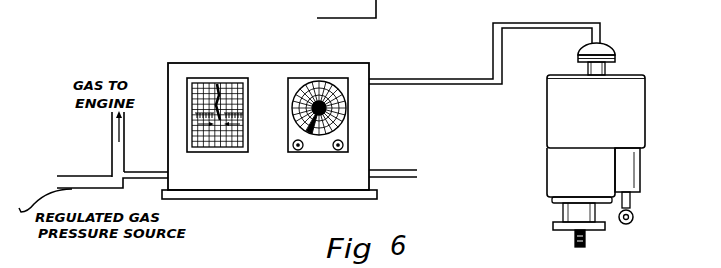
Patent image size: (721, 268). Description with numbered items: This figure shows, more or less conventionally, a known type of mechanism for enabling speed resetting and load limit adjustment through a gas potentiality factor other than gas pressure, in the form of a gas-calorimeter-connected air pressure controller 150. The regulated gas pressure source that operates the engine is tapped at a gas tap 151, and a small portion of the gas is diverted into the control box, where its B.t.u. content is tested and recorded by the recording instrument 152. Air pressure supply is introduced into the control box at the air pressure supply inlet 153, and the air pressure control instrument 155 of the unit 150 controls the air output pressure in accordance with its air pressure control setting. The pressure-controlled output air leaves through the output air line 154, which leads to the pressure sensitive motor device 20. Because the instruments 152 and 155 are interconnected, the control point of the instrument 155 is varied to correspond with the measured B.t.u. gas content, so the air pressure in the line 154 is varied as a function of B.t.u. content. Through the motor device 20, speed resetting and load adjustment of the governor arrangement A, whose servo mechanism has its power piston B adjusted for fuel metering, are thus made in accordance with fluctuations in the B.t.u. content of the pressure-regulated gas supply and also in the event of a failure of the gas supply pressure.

The gas-calorimeter-connected air pressure controller 150 is at (282, 52).
The gas tap 151 is at (154, 152).
The recording instrument 152 is at (229, 75).
The air pressure supply inlet 153 is at (396, 169).
The output air line 154 is at (449, 88).
The air pressure control instrument 155 is at (339, 75).
The pressure sensitive motor device 20 is at (617, 50).
The governor arrangement A is at (596, 161).
The power piston B is at (648, 178).